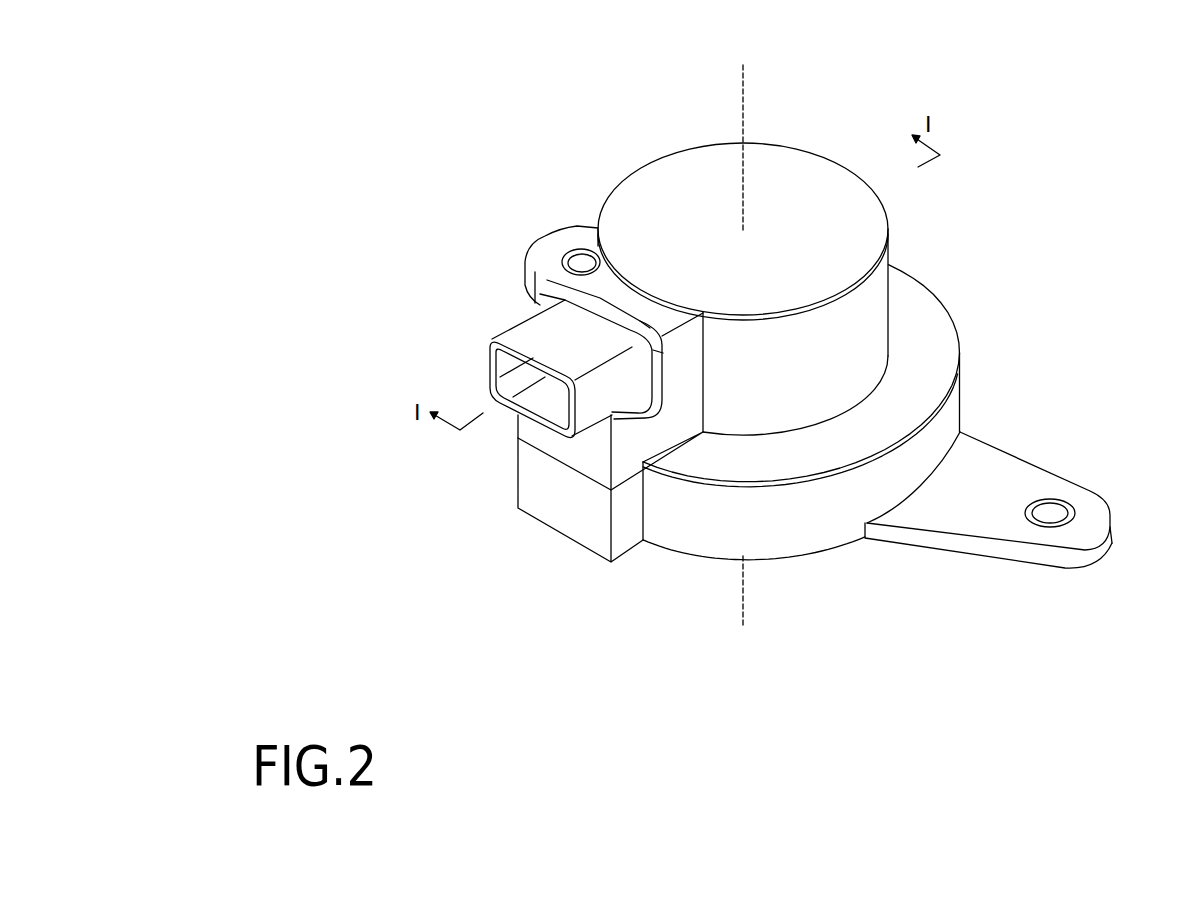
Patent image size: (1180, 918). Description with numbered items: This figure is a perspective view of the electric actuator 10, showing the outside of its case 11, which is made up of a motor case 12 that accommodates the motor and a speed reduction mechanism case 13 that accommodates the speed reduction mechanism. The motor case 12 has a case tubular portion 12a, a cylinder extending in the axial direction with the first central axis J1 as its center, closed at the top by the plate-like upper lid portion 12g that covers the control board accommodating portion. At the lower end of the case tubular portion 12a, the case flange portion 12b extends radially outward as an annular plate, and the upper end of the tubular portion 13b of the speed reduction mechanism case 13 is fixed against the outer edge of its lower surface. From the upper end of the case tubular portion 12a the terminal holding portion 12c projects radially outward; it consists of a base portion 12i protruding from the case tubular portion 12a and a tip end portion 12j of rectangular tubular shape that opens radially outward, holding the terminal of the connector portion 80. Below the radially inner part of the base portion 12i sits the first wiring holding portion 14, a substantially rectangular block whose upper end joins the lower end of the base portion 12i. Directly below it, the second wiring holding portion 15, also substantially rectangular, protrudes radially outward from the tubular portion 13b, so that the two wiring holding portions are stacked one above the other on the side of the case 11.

The electric actuator 10 is at (1058, 125).
The case 11 is at (1140, 262).
The motor case 12 is at (890, 246).
The case tubular portion 12a is at (863, 310).
The case flange portion 12b is at (795, 452).
The terminal holding portion 12c is at (490, 175).
The upper lid portion 12g is at (820, 195).
The base portion 12i is at (609, 285).
The tip end portion 12j is at (533, 333).
The speed reduction mechanism case 13 is at (993, 437).
The tubular portion 13b is at (720, 518).
The first wiring holding portion 14 is at (558, 443).
The second wiring holding portion 15 is at (568, 492).
The connector portion 80 is at (464, 341).
The first central axis J1 is at (752, 92).